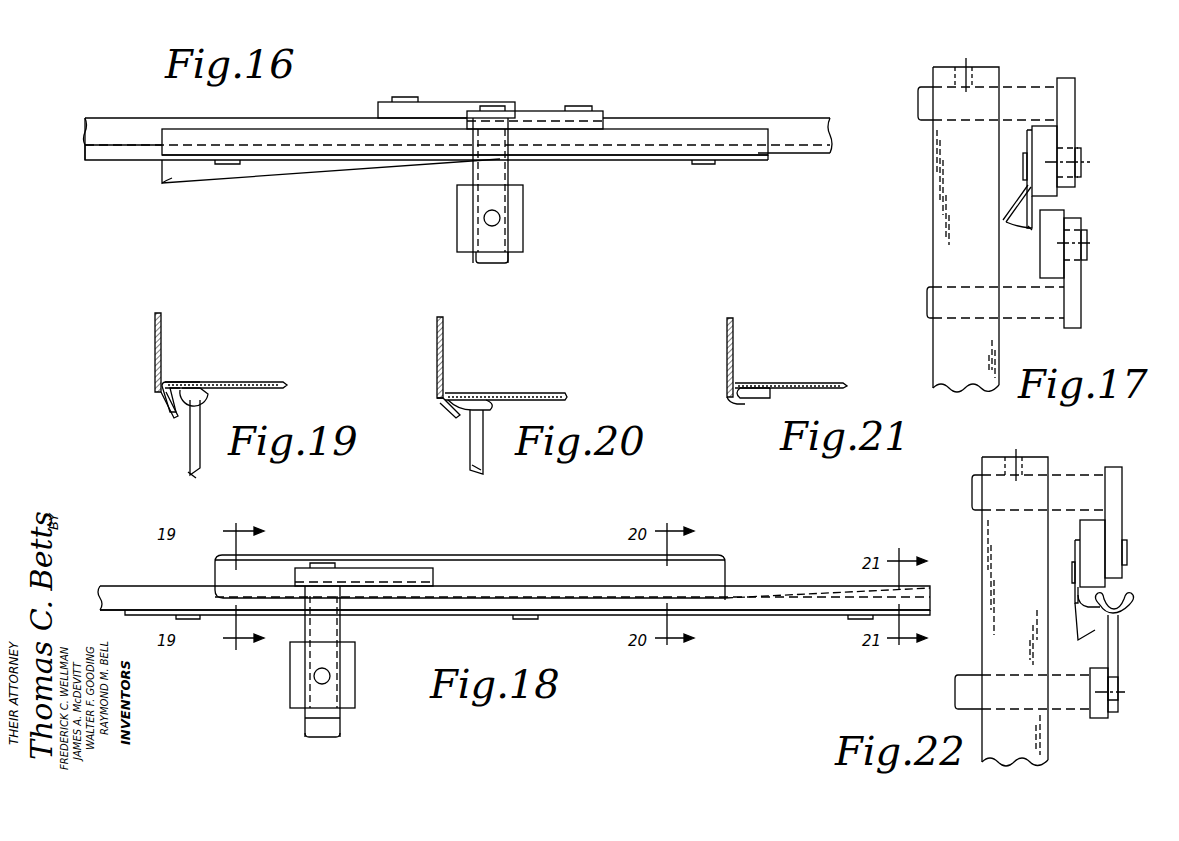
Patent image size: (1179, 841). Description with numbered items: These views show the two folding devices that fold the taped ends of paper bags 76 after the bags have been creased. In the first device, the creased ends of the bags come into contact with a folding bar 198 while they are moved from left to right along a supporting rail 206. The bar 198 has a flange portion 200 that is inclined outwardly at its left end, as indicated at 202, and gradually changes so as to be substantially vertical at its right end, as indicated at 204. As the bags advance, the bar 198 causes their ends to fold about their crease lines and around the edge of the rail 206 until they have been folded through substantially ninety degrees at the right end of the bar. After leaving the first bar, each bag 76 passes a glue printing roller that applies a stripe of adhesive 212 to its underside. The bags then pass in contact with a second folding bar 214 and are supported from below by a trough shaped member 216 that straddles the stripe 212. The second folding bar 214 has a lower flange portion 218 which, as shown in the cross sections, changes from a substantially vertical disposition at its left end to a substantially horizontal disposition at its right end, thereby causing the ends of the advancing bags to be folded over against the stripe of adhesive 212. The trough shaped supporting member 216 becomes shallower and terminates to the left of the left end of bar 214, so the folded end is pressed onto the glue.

In FIG. 19, the paper bag 76 is at (280, 379).
In FIG. 20, the paper bag 76 is at (560, 390).
In FIG. 21, the paper bag 76 is at (845, 381).
In FIG. 16, the folding bar 198 is at (402, 156).
In FIG. 17, the folding bar 198 is at (1030, 134).
In FIG. 16, the flange portion 200 is at (276, 174).
In FIG. 17, the flange portion 200 is at (1008, 226).
In FIG. 16, the outwardly inclined left end of flange 202 is at (162, 177).
In FIG. 17, the outwardly inclined left end of flange 202 is at (1008, 209).
In FIG. 17, the substantially vertical right end of flange 204 is at (1030, 232).
In FIG. 16, the supporting rail 206 is at (90, 145).
In FIG. 17, the supporting rail 206 is at (1052, 213).
In FIG. 19, the stripe of adhesive 212 is at (217, 369).
In FIG. 20, the stripe of adhesive 212 is at (477, 408).
In FIG. 21, the stripe of adhesive 212 is at (758, 388).
In FIG. 19, the second folding bar 214 is at (198, 346).
In FIG. 20, the second folding bar 214 is at (484, 346).
In FIG. 21, the second folding bar 214 is at (778, 333).
In FIG. 18, the second folding bar 214 is at (782, 612).
In FIG. 22, the second folding bar 214 is at (1076, 545).
In FIG. 19, the trough shaped member 216 is at (184, 410).
In FIG. 20, the trough shaped member 216 is at (472, 412).
In FIG. 18, the trough shaped member 216 is at (535, 567).
In FIG. 22, the trough shaped member 216 is at (1120, 617).
In FIG. 19, the lower flange portion 218 is at (158, 404).
In FIG. 20, the lower flange portion 218 is at (446, 408).
In FIG. 21, the lower flange portion 218 is at (742, 404).
In FIG. 22, the lower flange portion 218 is at (1100, 620).